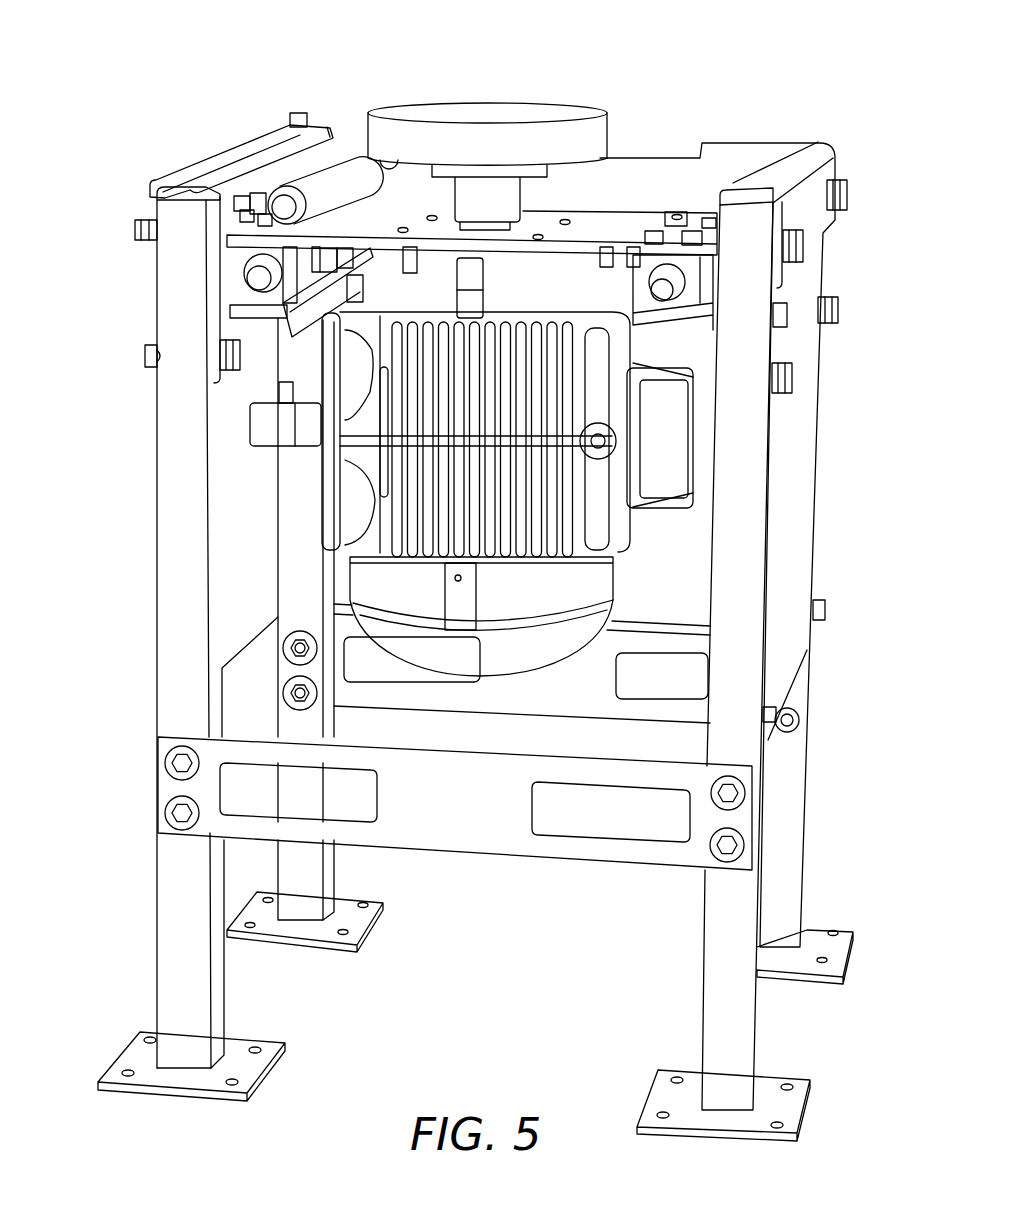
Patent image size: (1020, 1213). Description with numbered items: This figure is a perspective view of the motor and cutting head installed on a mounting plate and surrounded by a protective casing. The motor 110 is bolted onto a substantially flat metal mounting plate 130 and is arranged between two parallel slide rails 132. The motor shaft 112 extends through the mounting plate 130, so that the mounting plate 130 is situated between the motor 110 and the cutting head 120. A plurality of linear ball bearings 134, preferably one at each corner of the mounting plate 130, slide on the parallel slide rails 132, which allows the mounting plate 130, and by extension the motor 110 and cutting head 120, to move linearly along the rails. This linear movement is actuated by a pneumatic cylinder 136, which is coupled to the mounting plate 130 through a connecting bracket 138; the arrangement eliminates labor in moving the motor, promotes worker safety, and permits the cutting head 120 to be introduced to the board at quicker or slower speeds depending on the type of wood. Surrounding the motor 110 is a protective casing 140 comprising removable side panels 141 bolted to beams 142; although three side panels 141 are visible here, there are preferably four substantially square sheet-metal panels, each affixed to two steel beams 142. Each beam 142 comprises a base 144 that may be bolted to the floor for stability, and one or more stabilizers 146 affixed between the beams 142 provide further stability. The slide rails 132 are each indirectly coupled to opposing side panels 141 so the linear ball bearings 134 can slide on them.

The motor 110 is at (681, 535).
The motor shaft 112 is at (547, 233).
The cutting head 120 is at (611, 81).
The mounting plate 130 is at (467, 254).
The slide rails 132 is at (263, 280).
The linear ball bearings 134 is at (248, 250).
The pneumatic cylinder 136 is at (318, 182).
The connecting bracket 138 is at (368, 193).
The protective casing 140 is at (475, 641).
The side panels 141 is at (795, 437).
The beams 142 is at (190, 995).
The base 144 is at (813, 948).
The stabilizers 146 is at (474, 811).